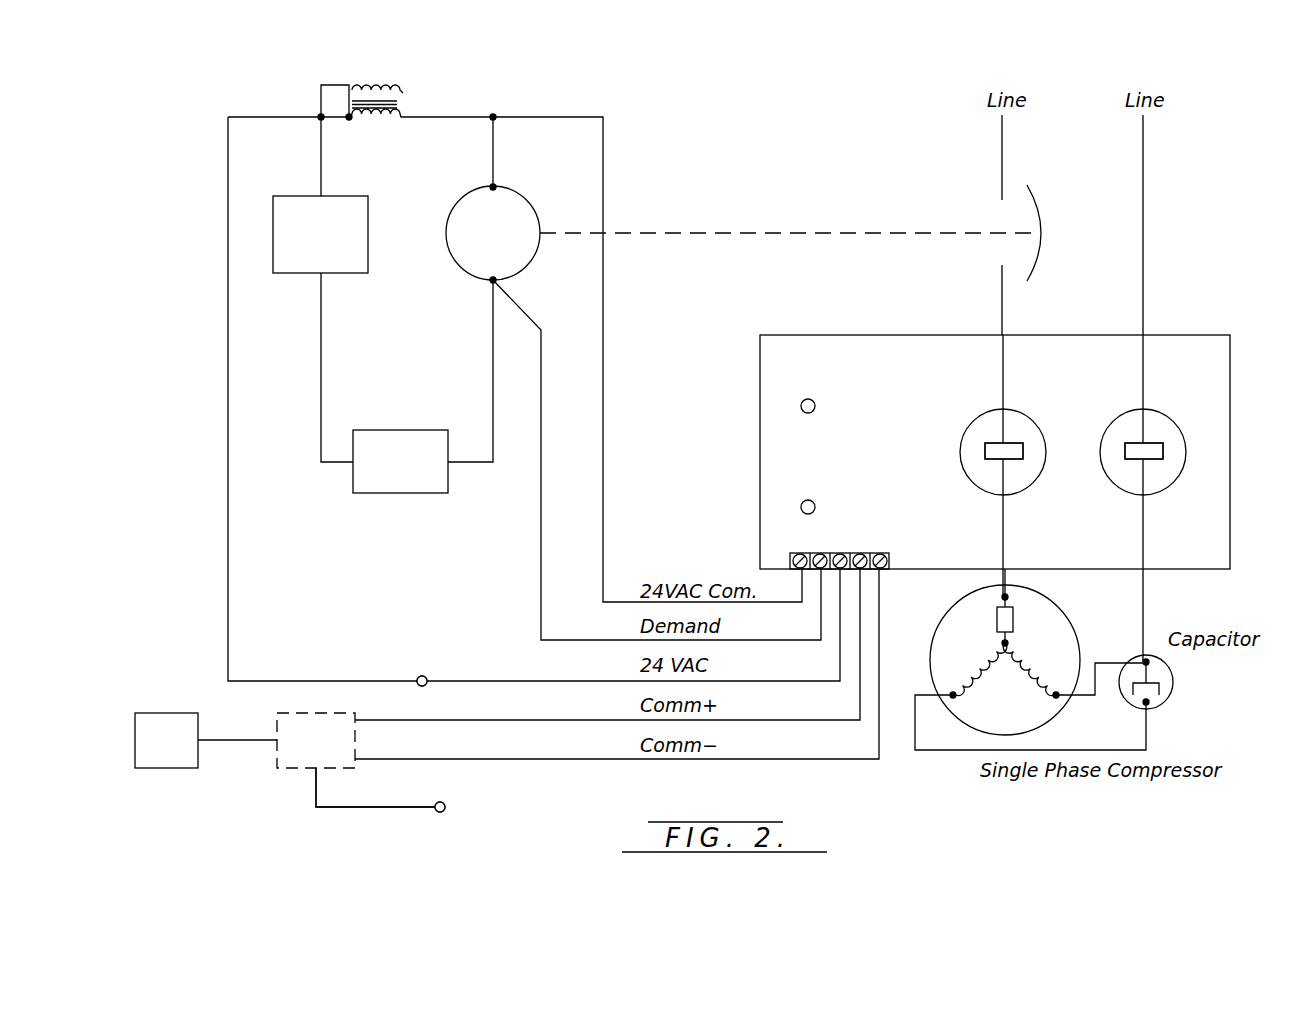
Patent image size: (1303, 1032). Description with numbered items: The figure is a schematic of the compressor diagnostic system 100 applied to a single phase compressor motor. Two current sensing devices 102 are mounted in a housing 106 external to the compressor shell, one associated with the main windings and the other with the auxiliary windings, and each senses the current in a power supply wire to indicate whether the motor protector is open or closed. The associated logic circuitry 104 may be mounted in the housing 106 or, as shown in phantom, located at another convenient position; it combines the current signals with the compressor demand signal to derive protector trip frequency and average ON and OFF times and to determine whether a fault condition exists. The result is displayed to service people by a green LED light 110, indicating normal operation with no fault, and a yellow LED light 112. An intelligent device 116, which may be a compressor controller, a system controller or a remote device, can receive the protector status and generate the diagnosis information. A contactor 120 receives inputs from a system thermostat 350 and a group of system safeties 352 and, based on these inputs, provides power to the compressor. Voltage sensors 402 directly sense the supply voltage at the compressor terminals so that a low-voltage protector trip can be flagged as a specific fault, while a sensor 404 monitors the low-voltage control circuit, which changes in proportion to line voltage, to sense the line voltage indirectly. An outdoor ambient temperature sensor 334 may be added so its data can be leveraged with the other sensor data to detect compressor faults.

The compressor diagnostic system 100 is at (794, 126).
The current sensing device 102 is at (1015, 447).
The logic circuitry 104 is at (877, 300).
The housing 106 is at (1200, 569).
The green LED light 110 is at (801, 406).
The yellow LED light 112 is at (801, 507).
The intelligent device 116 is at (206, 740).
The contactor 120 is at (462, 208).
The outdoor ambient temperature sensor 334 is at (445, 803).
The system thermostat 350 is at (288, 268).
The system safeties 352 is at (390, 488).
The voltage sensor 402 is at (990, 458).
The sensor 404 is at (422, 675).